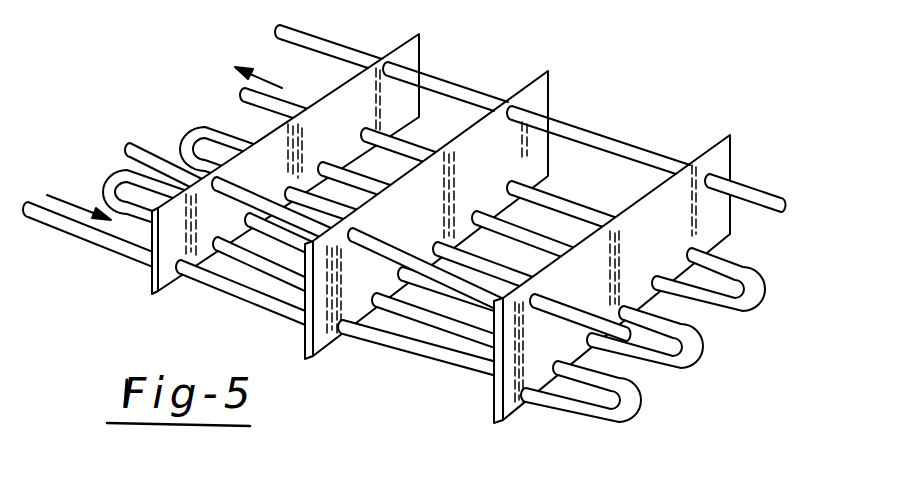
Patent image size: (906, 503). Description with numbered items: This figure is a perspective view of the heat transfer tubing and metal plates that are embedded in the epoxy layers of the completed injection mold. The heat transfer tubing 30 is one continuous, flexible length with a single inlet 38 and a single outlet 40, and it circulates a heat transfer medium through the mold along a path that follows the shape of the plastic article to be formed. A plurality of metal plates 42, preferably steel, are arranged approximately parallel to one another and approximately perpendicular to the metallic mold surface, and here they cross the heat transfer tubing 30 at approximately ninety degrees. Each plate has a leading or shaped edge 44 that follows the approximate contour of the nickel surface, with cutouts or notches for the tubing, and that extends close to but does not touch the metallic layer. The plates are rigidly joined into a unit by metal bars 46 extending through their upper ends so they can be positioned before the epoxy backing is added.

The heat transfer tubing 30 is at (763, 297).
The inlet 38 is at (38, 221).
The outlet 40 is at (243, 97).
The metal plates 42 is at (727, 156).
The leading or shaped edge 44 is at (505, 424).
The metal bars 46 is at (468, 88).